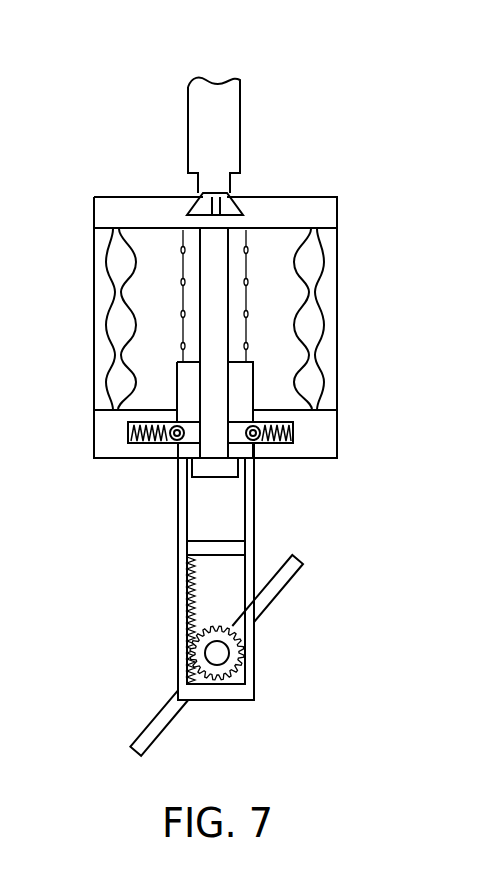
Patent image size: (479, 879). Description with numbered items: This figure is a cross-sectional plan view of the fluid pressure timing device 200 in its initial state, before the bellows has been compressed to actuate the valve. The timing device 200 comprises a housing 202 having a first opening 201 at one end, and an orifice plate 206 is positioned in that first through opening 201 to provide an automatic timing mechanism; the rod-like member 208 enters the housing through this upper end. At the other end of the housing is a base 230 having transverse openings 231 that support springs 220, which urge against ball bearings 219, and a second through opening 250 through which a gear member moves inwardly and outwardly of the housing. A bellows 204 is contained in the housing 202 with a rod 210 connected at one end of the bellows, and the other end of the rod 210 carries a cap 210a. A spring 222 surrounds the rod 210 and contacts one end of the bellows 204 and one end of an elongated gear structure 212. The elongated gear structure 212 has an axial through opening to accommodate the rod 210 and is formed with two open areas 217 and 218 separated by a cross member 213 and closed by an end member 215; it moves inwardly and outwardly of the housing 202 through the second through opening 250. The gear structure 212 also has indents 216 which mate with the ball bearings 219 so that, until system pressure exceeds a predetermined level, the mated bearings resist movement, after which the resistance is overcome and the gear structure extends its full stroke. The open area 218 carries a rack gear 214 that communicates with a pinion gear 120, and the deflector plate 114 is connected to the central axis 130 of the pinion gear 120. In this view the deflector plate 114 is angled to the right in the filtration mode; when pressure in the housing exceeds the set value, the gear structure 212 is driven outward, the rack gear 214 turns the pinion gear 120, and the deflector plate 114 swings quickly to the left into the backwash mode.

The timing device 200 is at (357, 149).
The drive rod 208 is at (228, 83).
The first opening 201 is at (198, 186).
The orifice plate 206 is at (236, 212).
The housing 202 is at (341, 299).
The bellows 204 is at (110, 246).
The spring 222 is at (183, 315).
The rod 210 is at (218, 260).
The elongated gear structure 212 is at (240, 396).
The base 230 is at (128, 428).
The springs 220 is at (130, 437).
The ball bearings 219 is at (293, 432).
The second through opening 250 is at (257, 441).
The transverse openings 231 is at (117, 457).
The indents 216 is at (262, 458).
The cap 210a is at (200, 468).
The cross member 213 is at (245, 548).
The open area 217 is at (230, 511).
The open area 218 is at (231, 584).
The rack gear 214 is at (190, 556).
The end member 215 is at (240, 692).
The deflector plate 114 is at (287, 577).
The pinion gear 120 is at (243, 652).
The central axis 130 is at (213, 680).